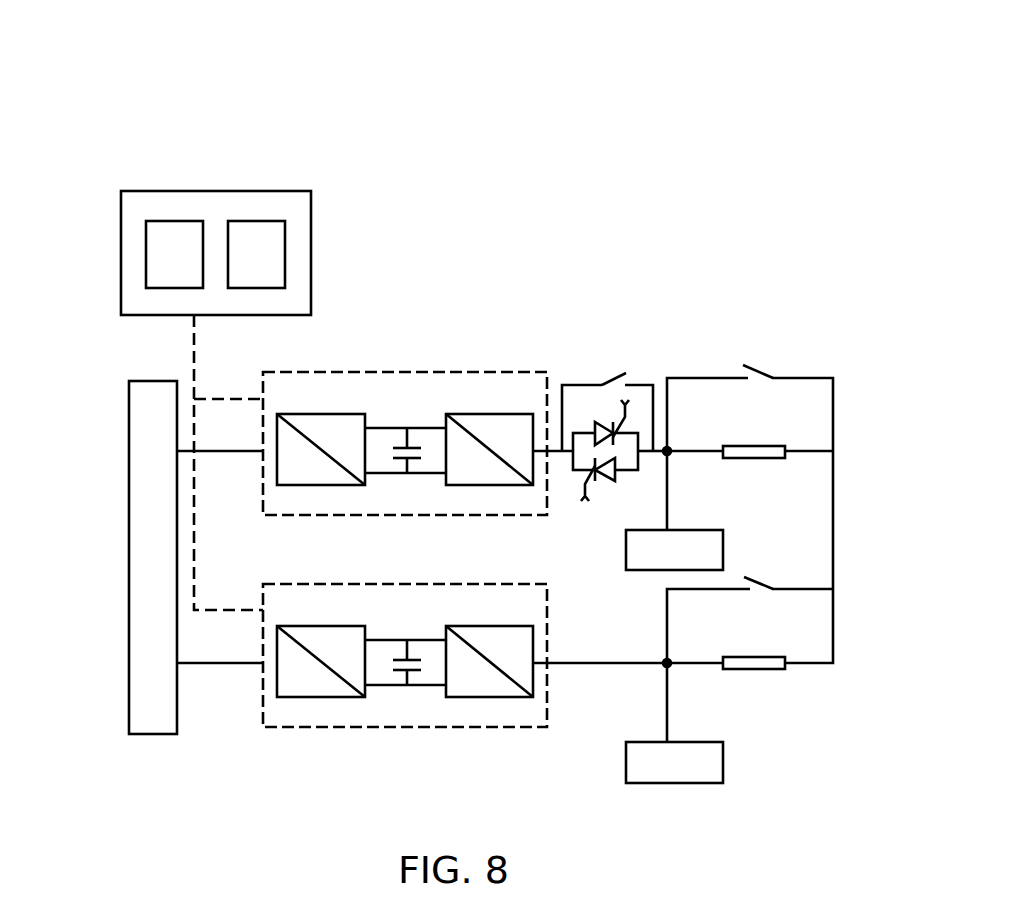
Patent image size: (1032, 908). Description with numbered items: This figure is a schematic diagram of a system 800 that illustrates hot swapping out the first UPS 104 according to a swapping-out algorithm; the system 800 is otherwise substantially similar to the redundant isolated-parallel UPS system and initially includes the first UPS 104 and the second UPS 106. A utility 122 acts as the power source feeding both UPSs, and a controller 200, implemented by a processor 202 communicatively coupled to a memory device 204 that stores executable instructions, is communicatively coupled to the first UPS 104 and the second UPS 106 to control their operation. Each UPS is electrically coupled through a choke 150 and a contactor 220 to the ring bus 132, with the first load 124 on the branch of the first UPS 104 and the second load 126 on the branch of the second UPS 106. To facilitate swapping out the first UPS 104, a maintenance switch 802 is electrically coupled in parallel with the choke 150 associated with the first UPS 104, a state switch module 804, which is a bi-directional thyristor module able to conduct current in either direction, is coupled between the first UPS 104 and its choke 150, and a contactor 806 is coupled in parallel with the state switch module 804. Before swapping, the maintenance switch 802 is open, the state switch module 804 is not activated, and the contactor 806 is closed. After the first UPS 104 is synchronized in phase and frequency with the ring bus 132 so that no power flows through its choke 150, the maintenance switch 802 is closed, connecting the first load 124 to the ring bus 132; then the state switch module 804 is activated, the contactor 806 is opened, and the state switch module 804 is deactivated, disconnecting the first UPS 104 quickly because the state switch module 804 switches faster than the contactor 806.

The system 800 is at (735, 82).
The controller 200 is at (258, 400).
The processor 202 is at (196, 269).
The memory device 204 is at (278, 269).
The utility 122 is at (128, 548).
The first UPS 104 is at (455, 371).
The second UPS 106 is at (455, 583).
The state switch module 804 is at (573, 478).
The contactor 806 is at (605, 372).
The maintenance switch 802 is at (760, 365).
The choke 150 is at (757, 445).
The contactor 220 is at (808, 460).
The ring bus 132 is at (792, 524).
The first load 124 is at (706, 525).
The second load 126 is at (706, 738).